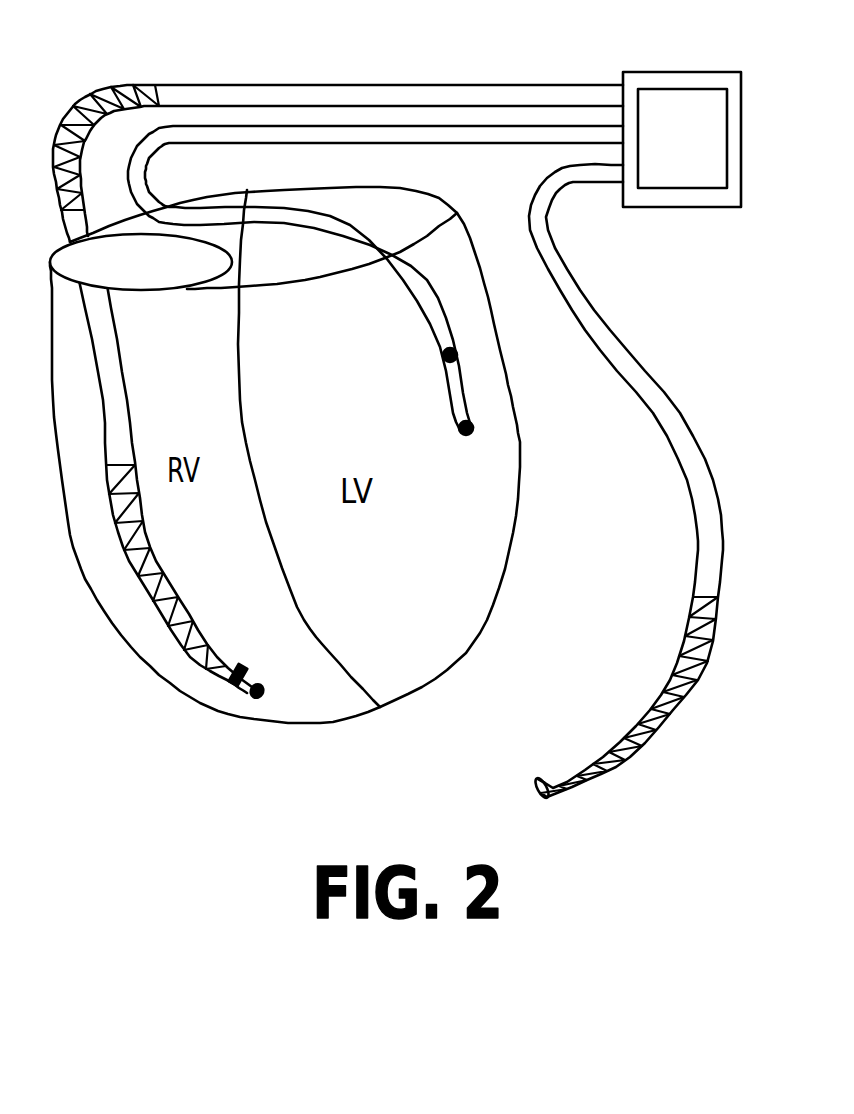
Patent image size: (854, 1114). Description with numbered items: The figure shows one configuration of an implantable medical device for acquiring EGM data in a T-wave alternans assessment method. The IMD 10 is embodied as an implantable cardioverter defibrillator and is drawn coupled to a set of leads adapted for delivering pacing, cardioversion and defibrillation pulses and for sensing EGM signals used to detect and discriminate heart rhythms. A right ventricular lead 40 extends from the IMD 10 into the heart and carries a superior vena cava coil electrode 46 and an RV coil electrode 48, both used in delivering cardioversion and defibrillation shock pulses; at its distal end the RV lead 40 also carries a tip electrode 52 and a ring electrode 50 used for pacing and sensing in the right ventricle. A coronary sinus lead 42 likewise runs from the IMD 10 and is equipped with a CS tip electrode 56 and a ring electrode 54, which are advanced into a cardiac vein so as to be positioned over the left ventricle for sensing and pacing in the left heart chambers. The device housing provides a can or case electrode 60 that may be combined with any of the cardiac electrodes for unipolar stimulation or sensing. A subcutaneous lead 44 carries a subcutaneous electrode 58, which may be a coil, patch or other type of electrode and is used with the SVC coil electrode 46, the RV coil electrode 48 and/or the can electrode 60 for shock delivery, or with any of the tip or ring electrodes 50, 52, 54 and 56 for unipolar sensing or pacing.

The IMD 10 is at (696, 109).
The right ventricular lead 40 is at (330, 390).
The coronary sinus lead 42 is at (375, 337).
The subcutaneous lead 44 is at (629, 482).
The superior vena cava coil electrode 46 is at (57, 118).
The RV coil electrode 48 is at (135, 578).
The ring electrode 50 is at (220, 675).
The tip electrode 52 is at (265, 688).
The ring electrode 54 is at (447, 360).
The CS tip electrode 56 is at (468, 436).
The subcutaneous electrode 58 is at (628, 733).
The can or case electrode 60 is at (743, 143).